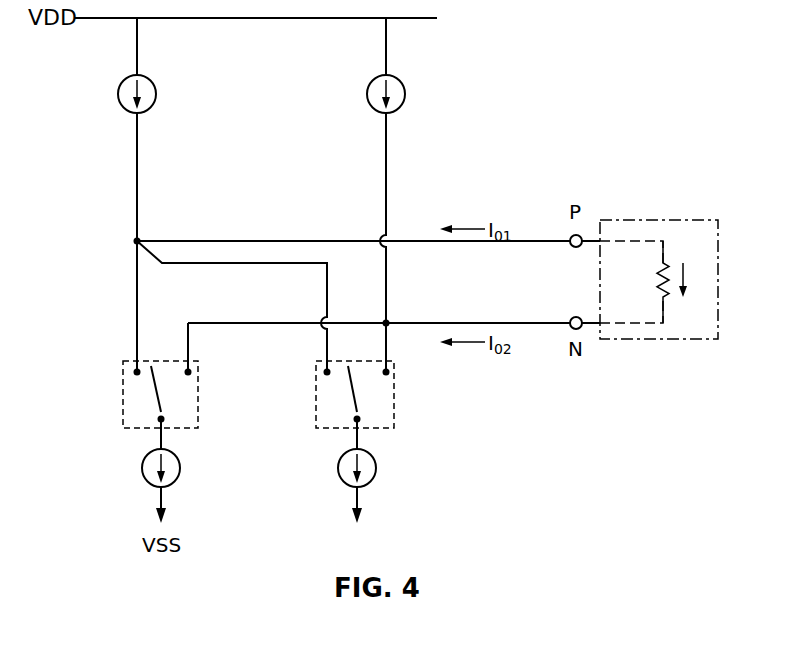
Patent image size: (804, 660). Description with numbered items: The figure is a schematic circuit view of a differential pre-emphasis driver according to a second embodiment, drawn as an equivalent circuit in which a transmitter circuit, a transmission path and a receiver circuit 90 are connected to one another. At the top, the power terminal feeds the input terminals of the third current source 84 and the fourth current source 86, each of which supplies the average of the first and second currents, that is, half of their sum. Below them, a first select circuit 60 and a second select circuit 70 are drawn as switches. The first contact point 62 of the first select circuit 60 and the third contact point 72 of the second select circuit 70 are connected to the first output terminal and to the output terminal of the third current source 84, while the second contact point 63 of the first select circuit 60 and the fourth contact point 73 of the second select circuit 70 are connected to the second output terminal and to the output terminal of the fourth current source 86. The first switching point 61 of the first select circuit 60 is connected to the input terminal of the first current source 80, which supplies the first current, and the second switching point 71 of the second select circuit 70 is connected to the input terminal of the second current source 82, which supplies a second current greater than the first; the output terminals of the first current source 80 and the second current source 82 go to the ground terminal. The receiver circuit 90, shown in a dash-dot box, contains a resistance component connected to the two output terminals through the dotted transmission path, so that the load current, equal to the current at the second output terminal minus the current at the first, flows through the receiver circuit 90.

The third current source 84 is at (118, 94).
The fourth current source 86 is at (400, 79).
The receiver circuit 90 is at (665, 220).
The first select circuit 60 is at (121, 398).
The first switching point 61 is at (158, 420).
The first contact point 62 is at (133, 372).
The second contact point 63 is at (192, 371).
The second select circuit 70 is at (396, 402).
The second switching point 71 is at (352, 419).
The third contact point 72 is at (323, 372).
The fourth contact point 73 is at (390, 372).
The first current source 80 is at (180, 466).
The second current source 82 is at (377, 466).